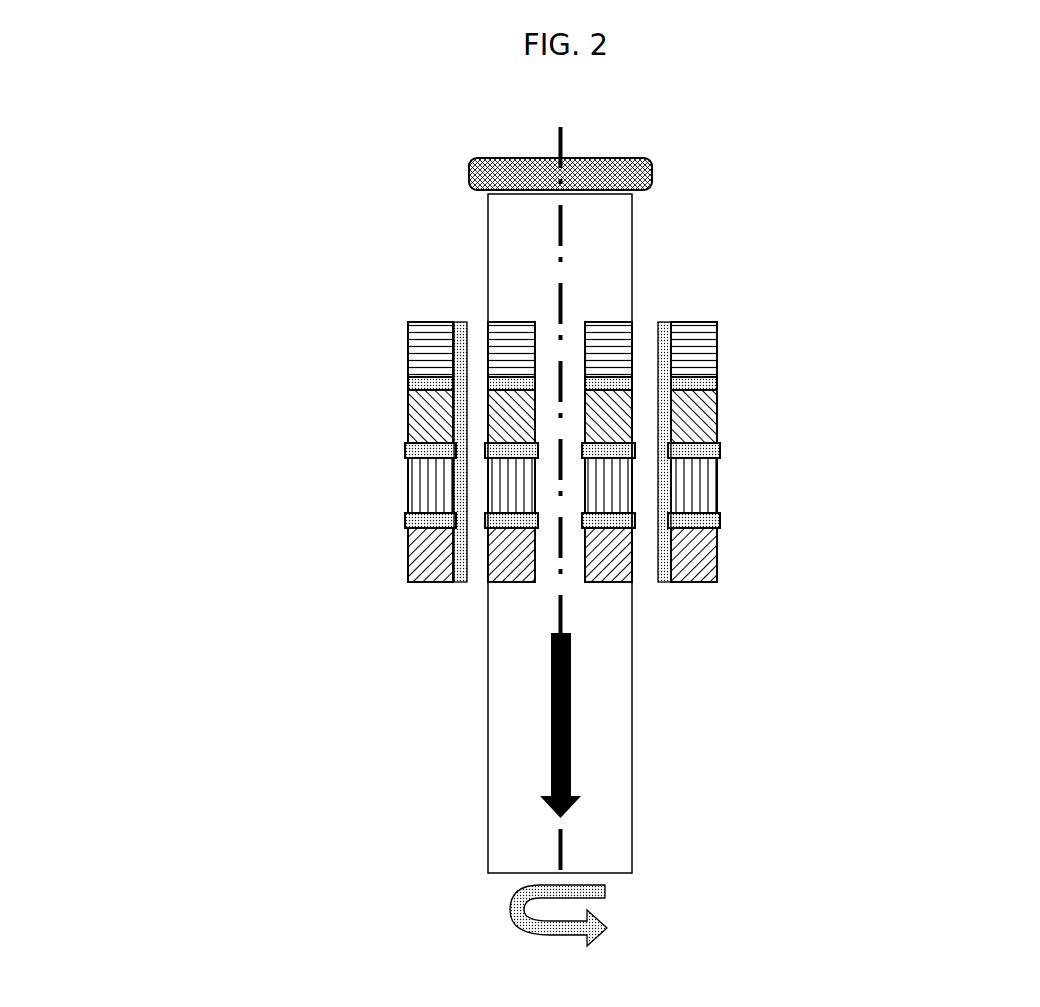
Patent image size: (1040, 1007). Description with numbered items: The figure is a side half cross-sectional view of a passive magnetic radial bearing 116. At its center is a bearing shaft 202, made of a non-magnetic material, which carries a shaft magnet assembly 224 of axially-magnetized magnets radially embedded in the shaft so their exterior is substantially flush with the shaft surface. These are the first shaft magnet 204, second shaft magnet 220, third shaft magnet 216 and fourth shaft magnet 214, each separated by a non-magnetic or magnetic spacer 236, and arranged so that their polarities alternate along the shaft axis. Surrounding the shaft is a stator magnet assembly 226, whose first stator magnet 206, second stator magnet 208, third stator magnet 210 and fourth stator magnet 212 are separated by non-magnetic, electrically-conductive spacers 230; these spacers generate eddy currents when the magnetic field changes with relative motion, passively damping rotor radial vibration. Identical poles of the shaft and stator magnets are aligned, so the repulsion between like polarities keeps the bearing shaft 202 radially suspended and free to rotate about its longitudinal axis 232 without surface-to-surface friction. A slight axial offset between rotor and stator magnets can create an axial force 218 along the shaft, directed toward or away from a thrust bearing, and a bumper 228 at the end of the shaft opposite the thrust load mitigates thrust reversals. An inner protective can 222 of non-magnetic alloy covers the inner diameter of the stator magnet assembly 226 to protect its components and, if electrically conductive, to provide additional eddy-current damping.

The passive magnetic radial bearing 116 is at (235, 372).
The bearing shaft 202 is at (552, 264).
The first shaft magnet 204 is at (598, 448).
The first stator magnet 206 is at (717, 349).
The second stator magnet 208 is at (717, 418).
The third stator magnet 210 is at (717, 485).
The fourth stator magnet 212 is at (744, 555).
The fourth shaft magnet 214 is at (632, 557).
The third shaft magnet 216 is at (587, 488).
The axial force 218 is at (571, 717).
The second shaft magnet 220 is at (632, 410).
The inner protective can 222 is at (661, 322).
The shaft magnet assembly 224 is at (407, 573).
The stator magnet assembly 226 is at (757, 429).
The bumper 228 is at (652, 174).
The spacer 230 is at (717, 383).
The longitudinal axis 232 is at (555, 845).
The spacer 236 is at (717, 520).